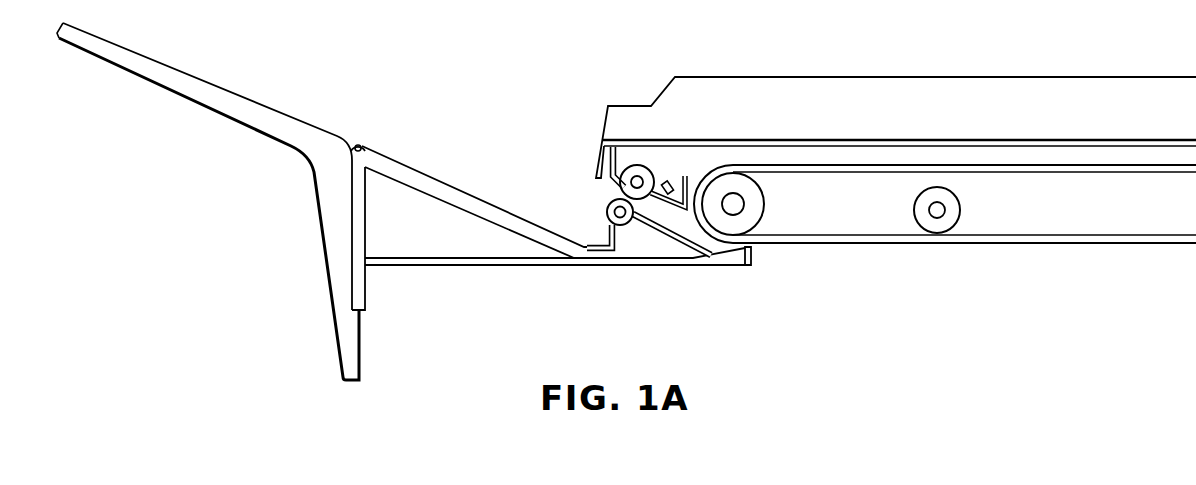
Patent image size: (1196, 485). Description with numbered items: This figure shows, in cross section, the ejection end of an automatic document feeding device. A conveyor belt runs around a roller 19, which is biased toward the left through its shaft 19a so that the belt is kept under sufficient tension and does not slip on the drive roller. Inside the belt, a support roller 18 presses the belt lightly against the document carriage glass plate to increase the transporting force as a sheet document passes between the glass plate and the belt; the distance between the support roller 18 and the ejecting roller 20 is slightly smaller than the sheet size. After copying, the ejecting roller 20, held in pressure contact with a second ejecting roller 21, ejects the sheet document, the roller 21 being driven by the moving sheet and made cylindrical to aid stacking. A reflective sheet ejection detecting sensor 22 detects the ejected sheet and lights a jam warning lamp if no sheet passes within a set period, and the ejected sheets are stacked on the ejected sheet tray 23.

The support roller 18 is at (958, 210).
The roller 19 is at (762, 201).
The shaft 19a is at (743, 209).
The ejecting roller 20 is at (641, 166).
The ejecting roller 21 is at (606, 206).
The reflective sheet ejection detecting sensor 22 is at (668, 177).
The ejected sheet tray 23 is at (386, 153).